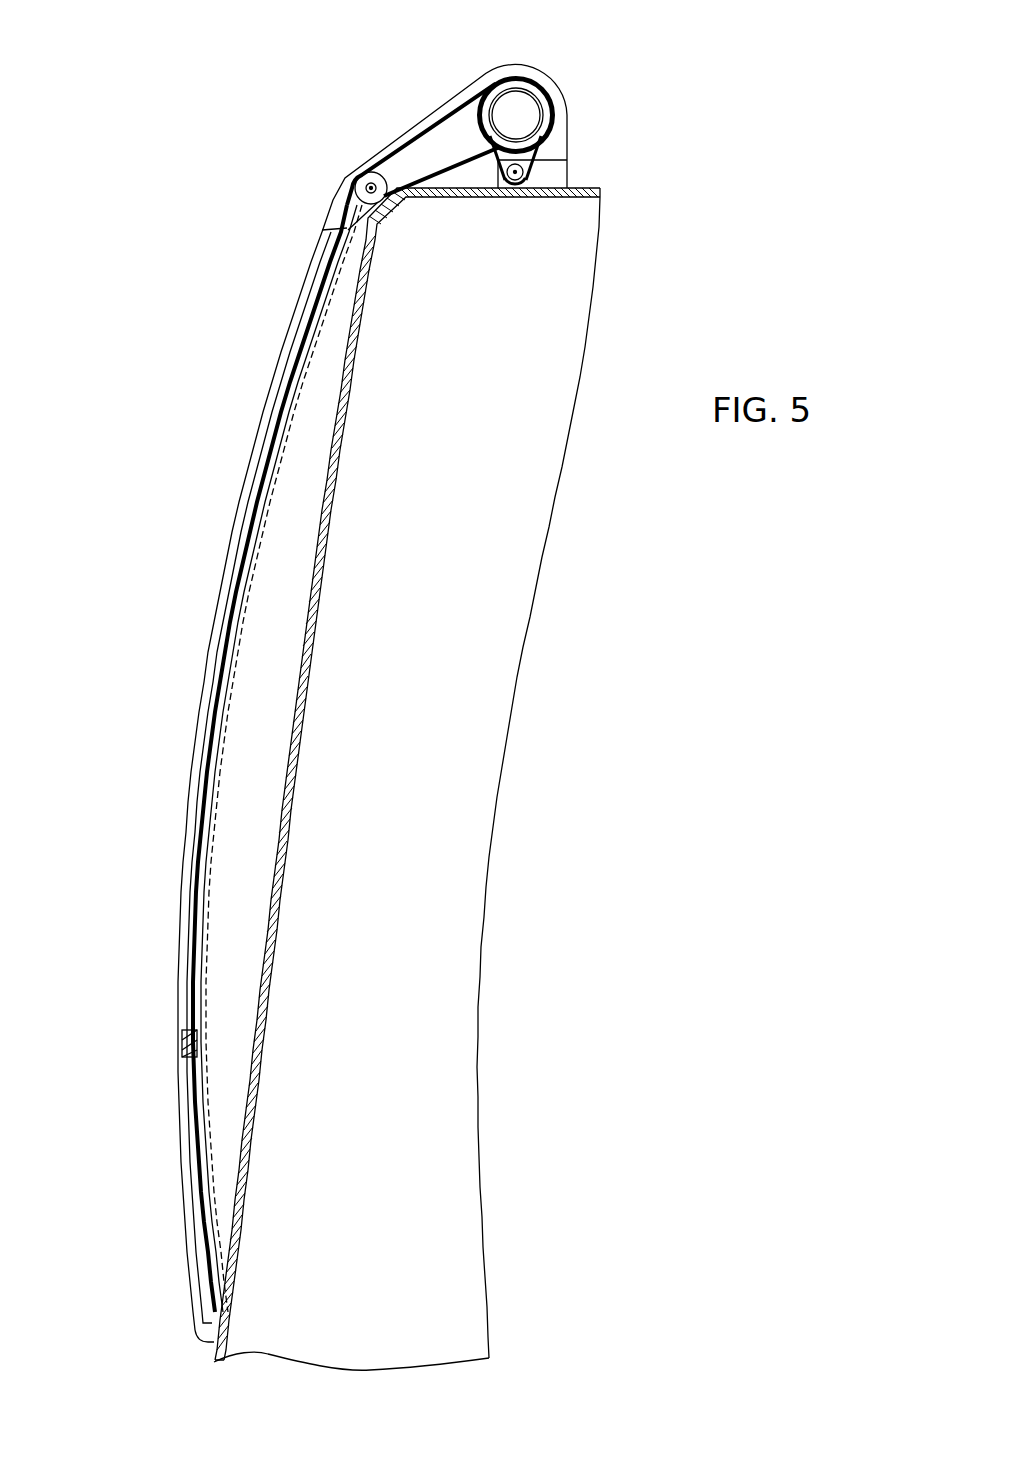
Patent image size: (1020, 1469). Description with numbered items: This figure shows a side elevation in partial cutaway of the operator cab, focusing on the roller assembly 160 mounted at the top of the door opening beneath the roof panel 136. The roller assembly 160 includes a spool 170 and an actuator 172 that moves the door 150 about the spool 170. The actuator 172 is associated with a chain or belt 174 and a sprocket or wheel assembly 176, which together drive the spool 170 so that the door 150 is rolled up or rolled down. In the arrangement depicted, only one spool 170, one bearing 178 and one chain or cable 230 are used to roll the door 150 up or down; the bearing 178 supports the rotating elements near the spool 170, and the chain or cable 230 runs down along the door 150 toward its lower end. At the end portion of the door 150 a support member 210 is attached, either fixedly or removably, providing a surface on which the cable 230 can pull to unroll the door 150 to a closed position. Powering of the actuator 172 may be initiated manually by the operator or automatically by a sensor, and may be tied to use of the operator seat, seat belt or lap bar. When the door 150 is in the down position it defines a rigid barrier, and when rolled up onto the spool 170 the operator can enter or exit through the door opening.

The roller assembly 160 is at (546, 56).
The spool 170 is at (550, 93).
The chain or belt 174 is at (553, 133).
The actuator 172 is at (548, 174).
The sprocket or wheel assembly 176 is at (512, 186).
The bearing 178 is at (378, 164).
The roof panel 136 is at (532, 198).
The door 150 is at (290, 358).
The chain or cable 230 is at (282, 478).
The support member 210 is at (182, 1037).